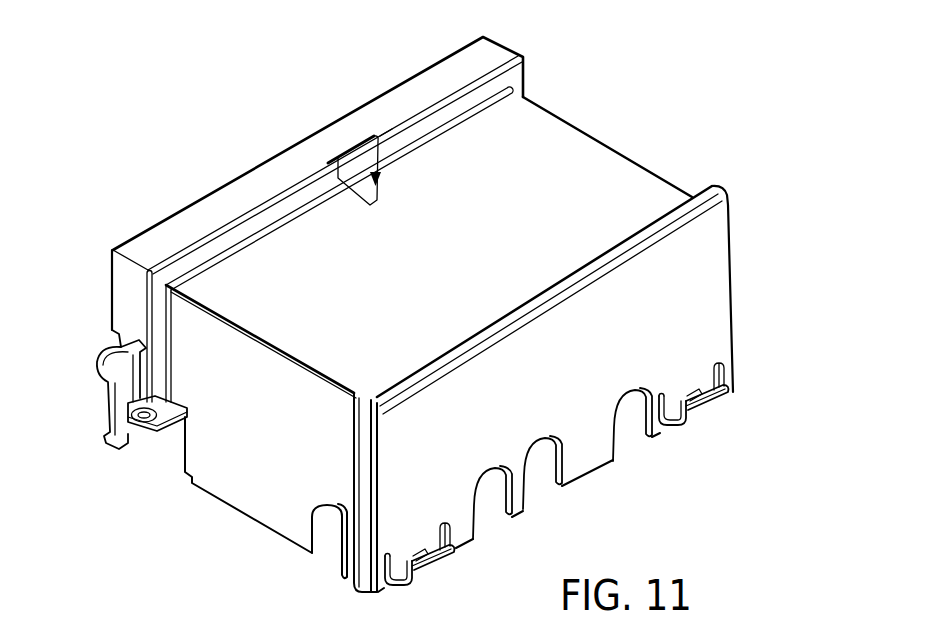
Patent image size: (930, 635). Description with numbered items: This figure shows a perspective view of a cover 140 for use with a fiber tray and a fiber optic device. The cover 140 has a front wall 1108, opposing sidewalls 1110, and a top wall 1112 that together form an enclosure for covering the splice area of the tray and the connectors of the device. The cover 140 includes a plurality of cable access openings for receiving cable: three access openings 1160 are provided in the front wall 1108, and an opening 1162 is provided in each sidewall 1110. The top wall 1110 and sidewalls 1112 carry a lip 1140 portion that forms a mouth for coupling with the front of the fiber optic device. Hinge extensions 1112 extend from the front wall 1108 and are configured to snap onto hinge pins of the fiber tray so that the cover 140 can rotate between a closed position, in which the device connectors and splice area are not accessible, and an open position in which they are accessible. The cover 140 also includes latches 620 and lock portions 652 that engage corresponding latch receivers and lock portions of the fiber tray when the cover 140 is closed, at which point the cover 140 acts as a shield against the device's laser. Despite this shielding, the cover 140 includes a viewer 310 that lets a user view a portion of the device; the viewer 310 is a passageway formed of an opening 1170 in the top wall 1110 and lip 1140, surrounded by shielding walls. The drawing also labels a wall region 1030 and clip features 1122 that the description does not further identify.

The cover 140 is at (690, 117).
The viewer 310 is at (346, 144).
The latch 620 is at (115, 412).
The lock portion 652 is at (153, 433).
The front wall 1030 is at (587, 438).
The front wall 1108 is at (708, 267).
The top wall 1110 is at (588, 158).
The hinge extension 1112 is at (252, 482).
The retention clips 1122 is at (435, 570).
The lip 1140 is at (270, 177).
The access openings 1160 is at (623, 417).
The opening 1162 is at (332, 520).
The opening 1170 is at (390, 156).